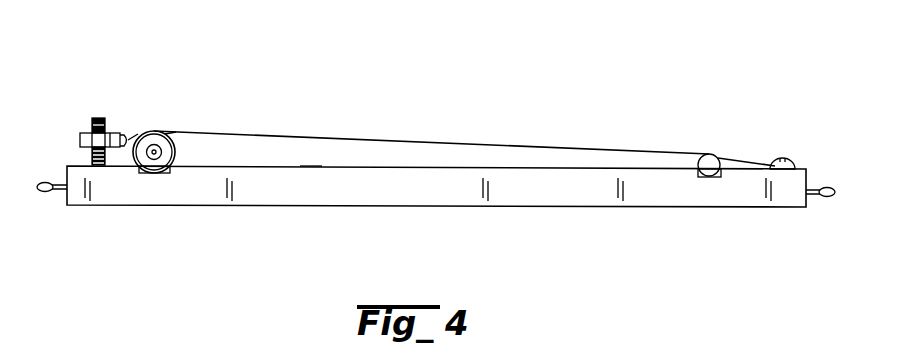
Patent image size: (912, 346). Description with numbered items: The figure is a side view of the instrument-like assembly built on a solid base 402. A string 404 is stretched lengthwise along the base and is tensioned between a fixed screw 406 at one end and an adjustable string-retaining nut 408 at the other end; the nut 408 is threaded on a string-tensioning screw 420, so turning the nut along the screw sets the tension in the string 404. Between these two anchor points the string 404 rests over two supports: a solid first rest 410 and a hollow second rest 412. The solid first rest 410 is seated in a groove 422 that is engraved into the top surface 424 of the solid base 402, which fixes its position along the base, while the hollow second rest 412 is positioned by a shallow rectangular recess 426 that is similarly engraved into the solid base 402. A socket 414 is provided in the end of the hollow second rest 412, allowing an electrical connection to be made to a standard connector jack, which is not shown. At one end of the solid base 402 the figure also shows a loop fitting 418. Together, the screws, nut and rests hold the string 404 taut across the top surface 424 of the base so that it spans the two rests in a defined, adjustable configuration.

The solid base 402 is at (447, 207).
The string 404 is at (528, 143).
The fixed screw 406 is at (783, 158).
The adjustable string-retaining nut 408 is at (80, 138).
The solid first rest 410 is at (709, 165).
The hollow second rest 412 is at (154, 152).
The socket 414 is at (172, 133).
The loop fitting 418 is at (52, 192).
The string-tensioning screw 420 is at (99, 118).
The groove 422 is at (715, 178).
The top surface 424 is at (311, 166).
The shallow rectangular recess 426 is at (165, 173).